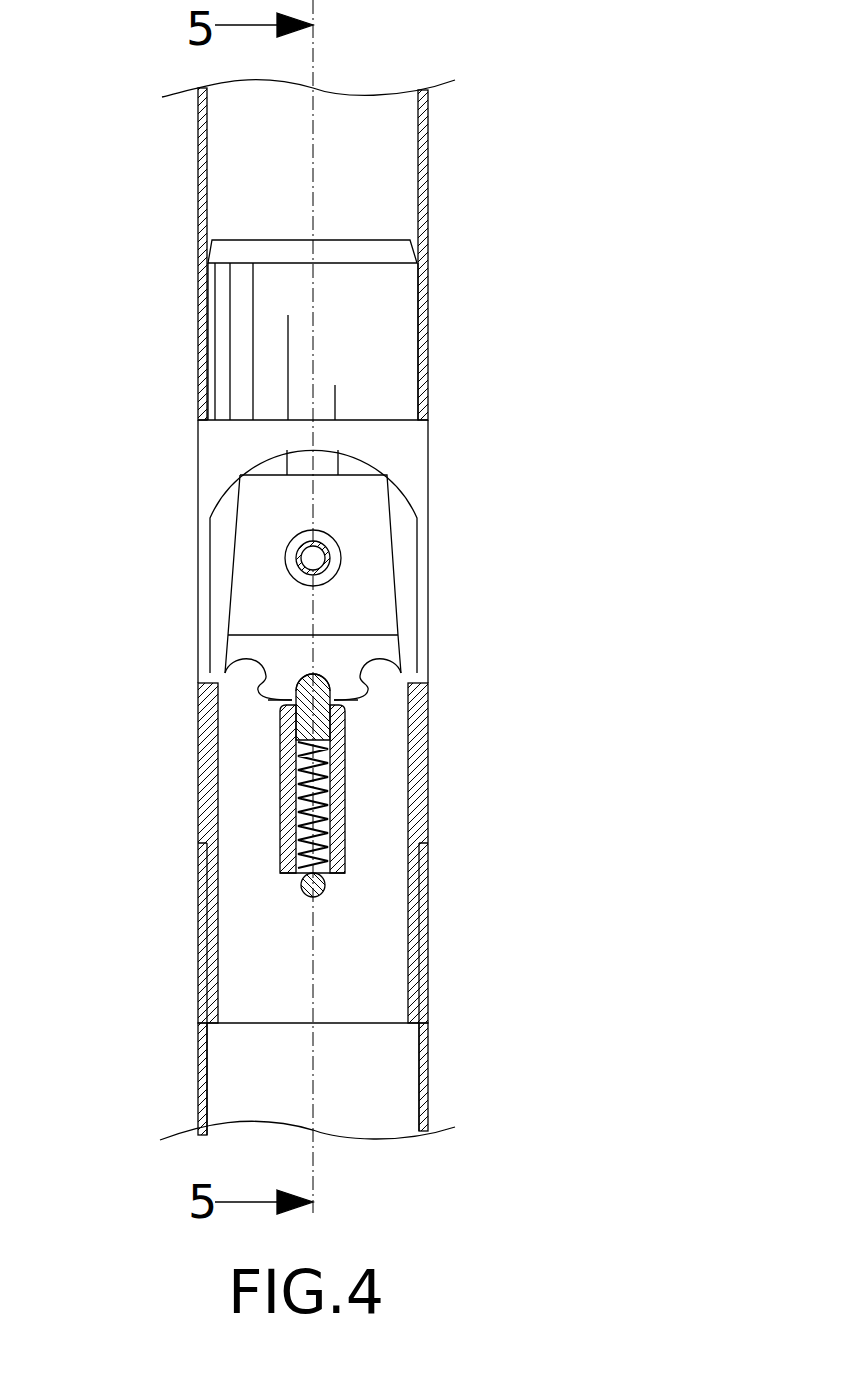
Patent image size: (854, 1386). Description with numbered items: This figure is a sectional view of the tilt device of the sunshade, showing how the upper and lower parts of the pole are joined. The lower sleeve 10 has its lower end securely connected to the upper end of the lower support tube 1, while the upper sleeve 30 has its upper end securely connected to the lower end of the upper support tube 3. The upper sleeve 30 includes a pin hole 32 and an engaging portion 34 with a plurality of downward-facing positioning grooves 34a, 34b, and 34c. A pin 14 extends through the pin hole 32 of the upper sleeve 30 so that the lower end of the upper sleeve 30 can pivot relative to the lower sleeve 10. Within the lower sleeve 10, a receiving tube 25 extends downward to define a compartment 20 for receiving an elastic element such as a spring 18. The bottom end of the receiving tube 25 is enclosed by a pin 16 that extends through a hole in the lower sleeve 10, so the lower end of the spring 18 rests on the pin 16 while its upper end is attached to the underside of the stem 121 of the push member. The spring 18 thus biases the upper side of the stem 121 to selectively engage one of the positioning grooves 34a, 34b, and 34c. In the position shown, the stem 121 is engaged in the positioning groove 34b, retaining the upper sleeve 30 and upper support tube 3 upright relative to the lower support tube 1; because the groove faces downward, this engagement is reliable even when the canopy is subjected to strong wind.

The lower support tube 1 is at (428, 1058).
The upper support tube 3 is at (428, 163).
The lower sleeve 10 is at (212, 948).
The pin 14 is at (328, 548).
The pin 16 is at (303, 893).
The spring 18 is at (335, 830).
The compartment 20 is at (280, 805).
The receiving tube 25 is at (340, 800).
The upper sleeve 30 is at (383, 318).
The pin hole 32 is at (297, 547).
The engaging portion 34 is at (340, 648).
The positioning groove 34a is at (245, 670).
The positioning groove 34b is at (333, 722).
The positioning groove 34c is at (380, 672).
The stem 121 is at (282, 713).